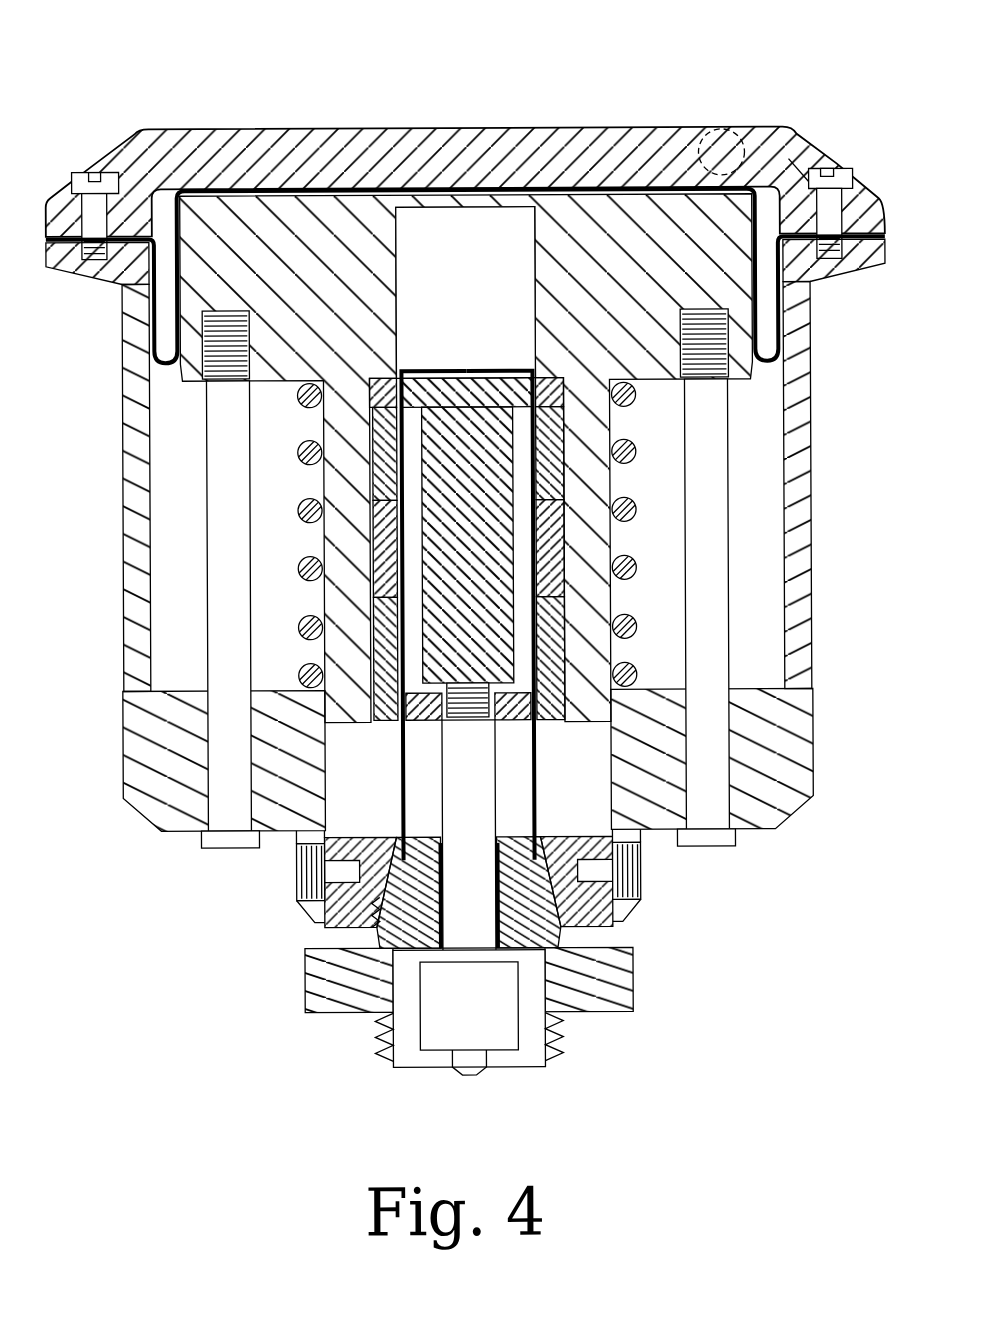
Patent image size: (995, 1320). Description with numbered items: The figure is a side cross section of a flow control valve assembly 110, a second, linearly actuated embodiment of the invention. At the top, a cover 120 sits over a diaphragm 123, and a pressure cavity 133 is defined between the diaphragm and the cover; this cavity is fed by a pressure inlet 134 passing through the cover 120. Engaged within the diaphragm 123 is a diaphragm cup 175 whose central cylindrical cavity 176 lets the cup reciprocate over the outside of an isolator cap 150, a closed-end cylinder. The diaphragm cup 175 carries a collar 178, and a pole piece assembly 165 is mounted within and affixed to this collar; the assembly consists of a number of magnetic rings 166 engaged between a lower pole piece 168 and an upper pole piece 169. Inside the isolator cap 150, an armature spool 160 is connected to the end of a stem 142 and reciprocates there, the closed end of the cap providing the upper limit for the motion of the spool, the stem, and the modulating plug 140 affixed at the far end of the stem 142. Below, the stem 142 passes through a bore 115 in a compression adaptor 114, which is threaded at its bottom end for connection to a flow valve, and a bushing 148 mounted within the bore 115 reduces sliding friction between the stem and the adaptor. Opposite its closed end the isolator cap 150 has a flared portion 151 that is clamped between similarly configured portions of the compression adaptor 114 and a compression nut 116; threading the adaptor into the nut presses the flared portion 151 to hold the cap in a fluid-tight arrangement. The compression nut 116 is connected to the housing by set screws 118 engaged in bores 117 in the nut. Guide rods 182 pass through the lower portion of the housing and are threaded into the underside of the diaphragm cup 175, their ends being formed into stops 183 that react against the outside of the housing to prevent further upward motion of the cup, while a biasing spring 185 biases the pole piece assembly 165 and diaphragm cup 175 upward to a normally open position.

The flow control valve assembly 110 is at (660, 78).
The compression adaptor 114 is at (633, 985).
The bore 115 is at (495, 927).
The compression nut 116 is at (638, 950).
The bores 117 is at (311, 923).
The set screws 118 is at (294, 887).
The cover 120 is at (525, 130).
The diaphragm 123 is at (623, 188).
The pressure cavity 133 is at (370, 188).
The pressure inlet 134 is at (741, 125).
The modulating plug 140 is at (430, 1033).
The stem 142 is at (453, 783).
The bushing 148 is at (400, 800).
The isolator cap 150 is at (536, 783).
The flared portion 151 is at (546, 847).
The armature spool 160 is at (445, 392).
The pole piece assembly 165 is at (575, 514).
The magnetic rings 166 is at (372, 550).
The lower pole piece 168 is at (368, 400).
The upper pole piece 169 is at (378, 695).
The diaphragm cup 175 is at (190, 367).
The cylindrical cavity 176 is at (396, 274).
The collar 178 is at (597, 595).
The guide rods 182 is at (217, 800).
The stops 183 is at (210, 840).
The biasing spring 185 is at (312, 612).